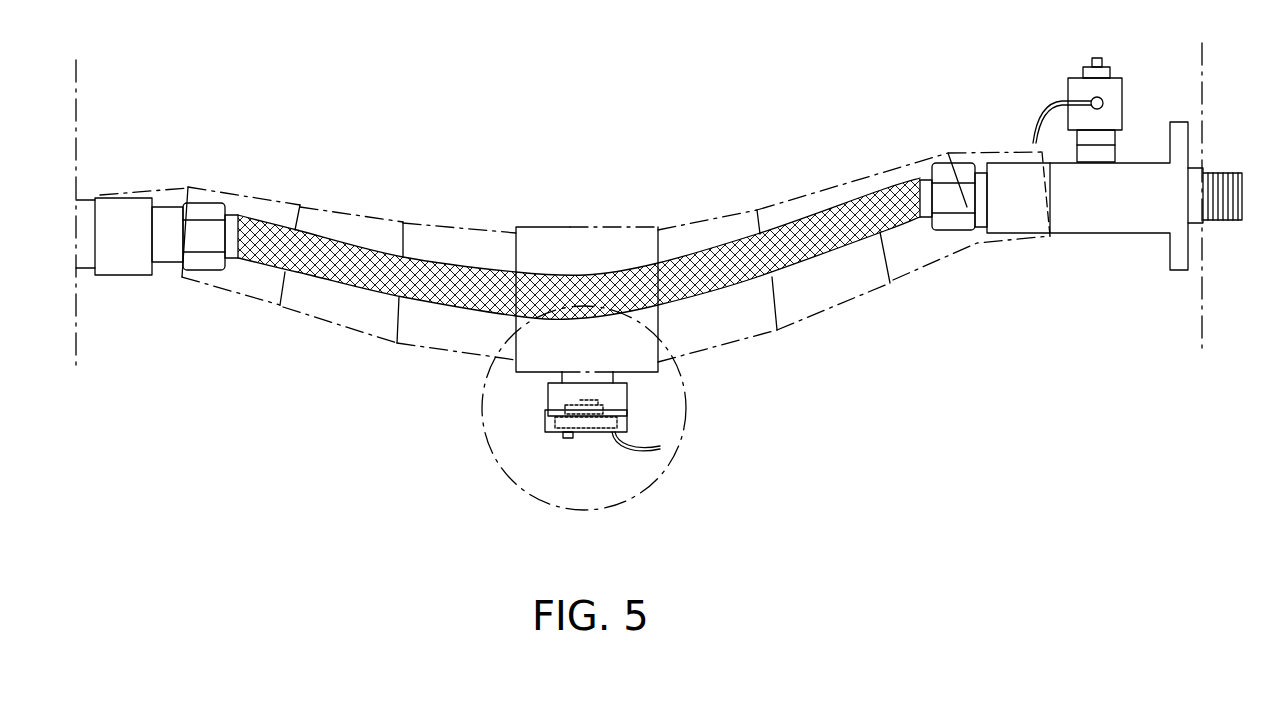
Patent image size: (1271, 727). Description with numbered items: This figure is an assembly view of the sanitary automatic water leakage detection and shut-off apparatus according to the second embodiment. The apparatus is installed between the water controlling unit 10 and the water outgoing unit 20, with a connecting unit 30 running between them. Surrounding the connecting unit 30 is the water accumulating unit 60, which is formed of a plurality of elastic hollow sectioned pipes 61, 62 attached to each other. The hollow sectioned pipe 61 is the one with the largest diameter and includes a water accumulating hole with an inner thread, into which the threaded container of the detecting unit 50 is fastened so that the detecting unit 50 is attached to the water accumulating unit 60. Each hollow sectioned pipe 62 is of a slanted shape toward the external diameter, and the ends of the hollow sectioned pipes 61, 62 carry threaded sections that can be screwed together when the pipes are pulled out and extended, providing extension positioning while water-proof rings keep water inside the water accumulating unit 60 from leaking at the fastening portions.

The water controlling unit 10 is at (1098, 243).
The water outgoing unit 20 is at (123, 262).
The connecting unit 30 is at (436, 320).
The detecting unit 50 is at (652, 411).
The water accumulating unit 60 is at (575, 231).
The hollow sectioned pipe 61 is at (625, 235).
The hollow sectioned pipe 62 is at (376, 235).